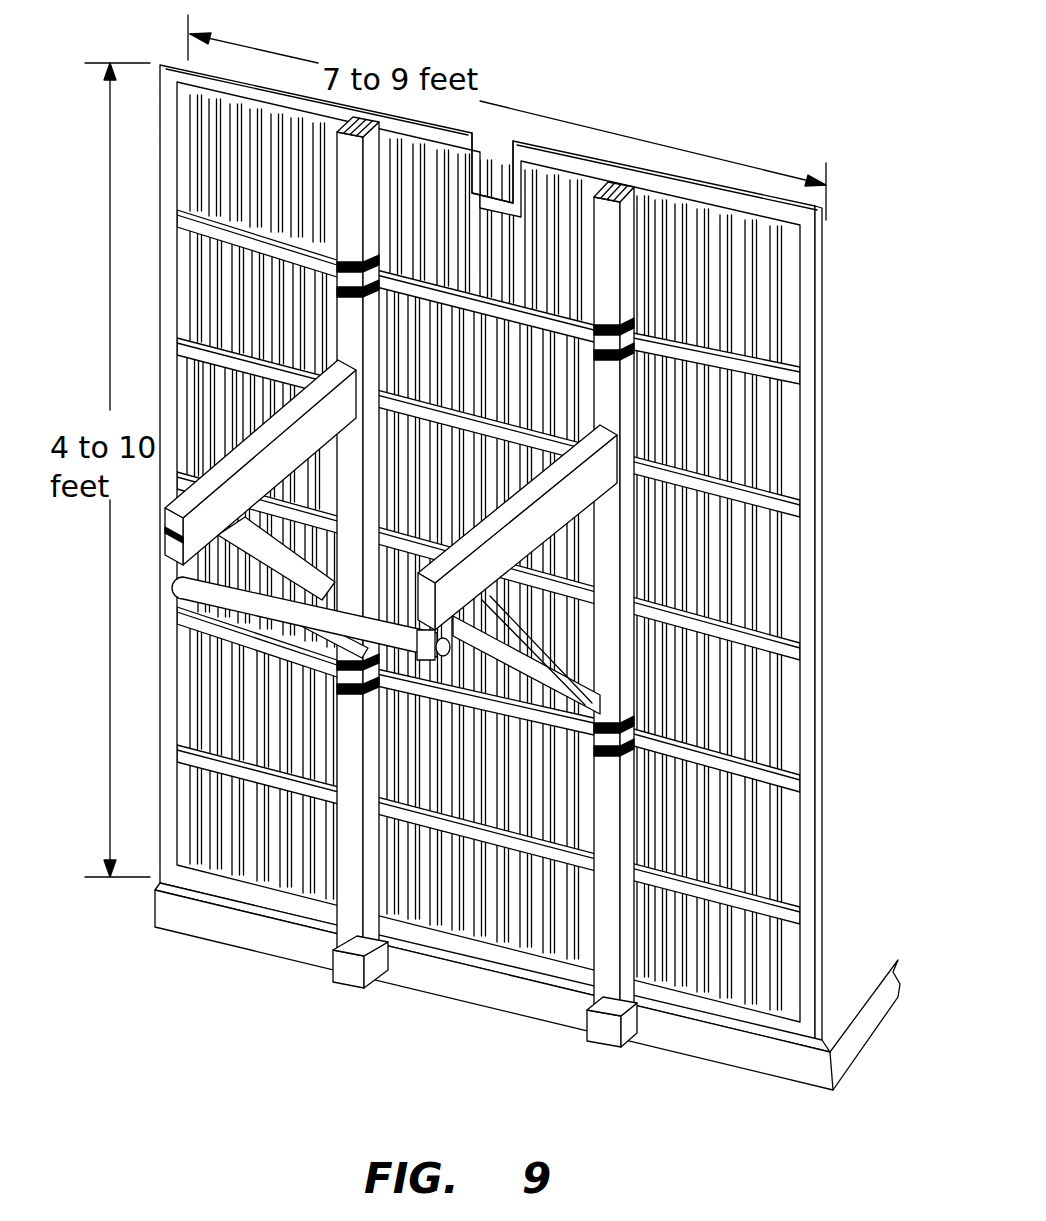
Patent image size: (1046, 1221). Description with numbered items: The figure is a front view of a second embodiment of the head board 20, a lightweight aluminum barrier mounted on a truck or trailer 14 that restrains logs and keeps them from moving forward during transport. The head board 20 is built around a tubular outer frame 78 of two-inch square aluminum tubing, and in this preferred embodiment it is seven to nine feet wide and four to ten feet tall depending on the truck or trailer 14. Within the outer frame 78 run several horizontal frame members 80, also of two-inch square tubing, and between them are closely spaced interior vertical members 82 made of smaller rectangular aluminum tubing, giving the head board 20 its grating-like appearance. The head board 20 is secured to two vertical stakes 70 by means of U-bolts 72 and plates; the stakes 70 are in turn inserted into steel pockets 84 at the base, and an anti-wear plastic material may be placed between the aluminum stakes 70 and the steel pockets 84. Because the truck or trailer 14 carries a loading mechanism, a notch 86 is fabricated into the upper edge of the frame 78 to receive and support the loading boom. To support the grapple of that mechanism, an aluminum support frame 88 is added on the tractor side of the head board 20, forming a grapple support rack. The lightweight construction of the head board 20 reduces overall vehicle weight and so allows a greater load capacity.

The head board 20 is at (608, 110).
The truck or trailer 14 is at (486, 1015).
The vertical stake 70 is at (638, 179).
The U-bolt 72 is at (610, 325).
The outer frame 78 is at (830, 337).
The horizontal frame member 80 is at (808, 652).
The interior vertical member 82 is at (798, 700).
The steel pocket 84 is at (323, 980).
The notch 86 is at (496, 180).
The aluminum support frame 88 is at (148, 538).